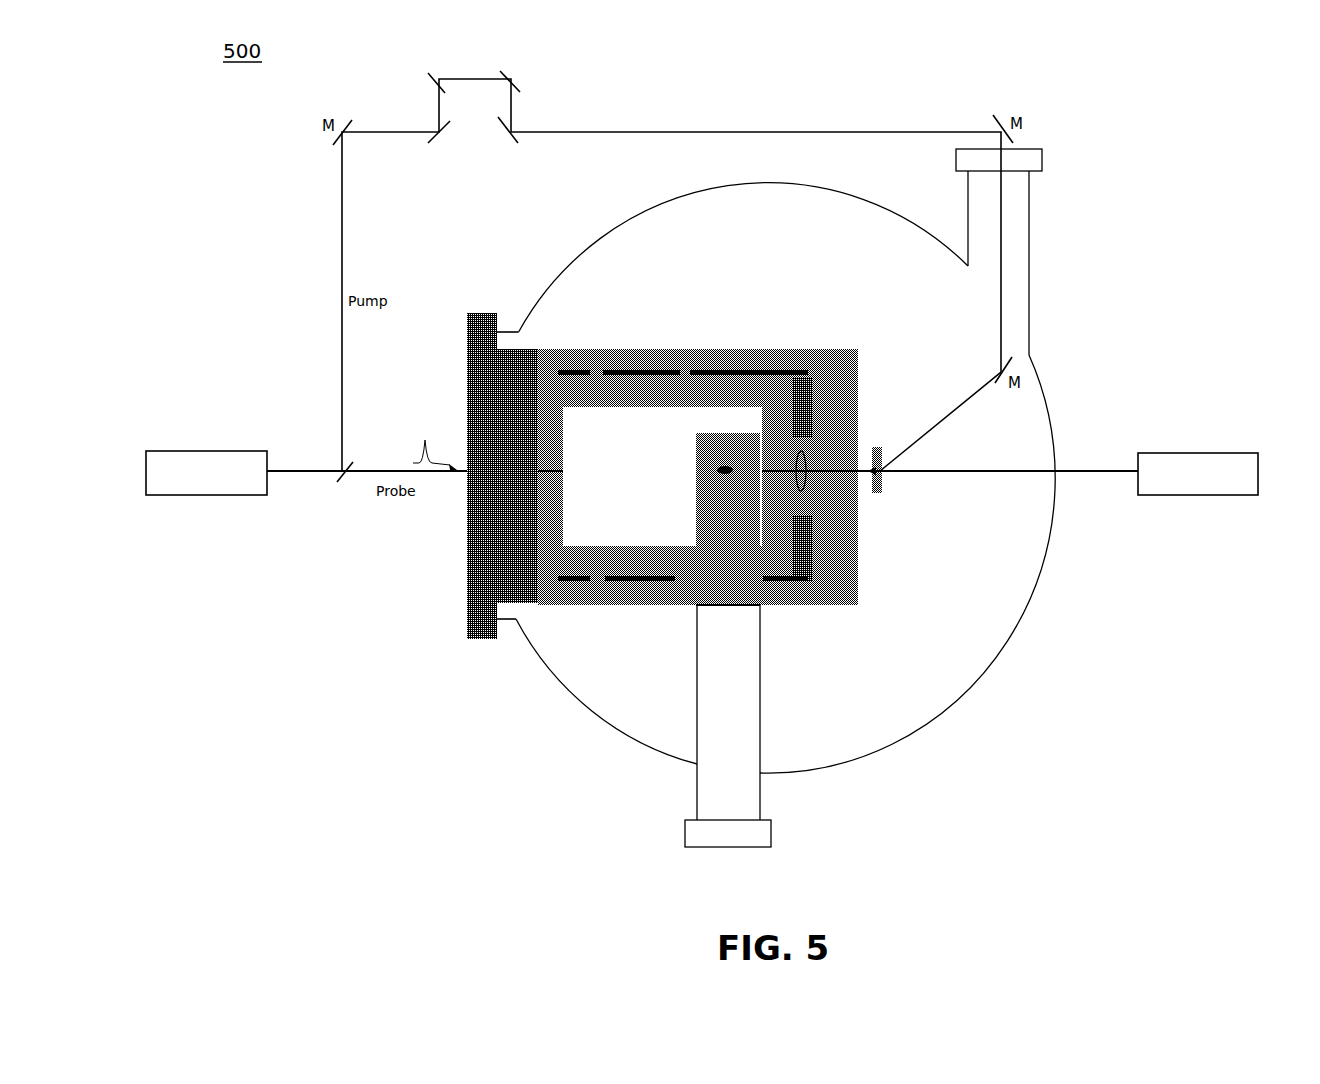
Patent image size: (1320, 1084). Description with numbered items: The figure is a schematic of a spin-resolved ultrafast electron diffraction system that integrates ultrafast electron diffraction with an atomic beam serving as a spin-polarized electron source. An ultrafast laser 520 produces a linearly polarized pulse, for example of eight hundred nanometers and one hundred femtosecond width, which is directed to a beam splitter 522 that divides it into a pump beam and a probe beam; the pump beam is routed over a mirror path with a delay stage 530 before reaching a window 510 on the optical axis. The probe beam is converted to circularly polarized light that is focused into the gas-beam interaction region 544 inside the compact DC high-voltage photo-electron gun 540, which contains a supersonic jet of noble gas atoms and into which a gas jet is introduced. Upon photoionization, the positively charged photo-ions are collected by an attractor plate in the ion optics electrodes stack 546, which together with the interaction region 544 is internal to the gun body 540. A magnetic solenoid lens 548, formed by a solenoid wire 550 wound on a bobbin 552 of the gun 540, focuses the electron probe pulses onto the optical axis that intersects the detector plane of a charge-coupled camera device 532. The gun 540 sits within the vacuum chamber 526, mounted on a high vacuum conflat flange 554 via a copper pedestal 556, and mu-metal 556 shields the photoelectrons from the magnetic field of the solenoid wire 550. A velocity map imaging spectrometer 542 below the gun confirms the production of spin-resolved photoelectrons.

The window 510 is at (874, 433).
The ultrafast laser 520 is at (206, 473).
The beam splitter 522 is at (338, 486).
The vacuum chamber 526 is at (905, 735).
The delay stage 530 is at (474, 97).
The charge-coupled camera device (CCD) 532 is at (1198, 474).
The photo-electron gun 540 is at (858, 603).
The velocity map imaging (VMI) spectrometer 542 is at (757, 847).
The gas-beam interaction region 544 is at (716, 462).
The ion optics electrodes stack 546 is at (708, 492).
The magnetic solenoid lens 548 is at (820, 486).
The solenoid wire 550 is at (641, 364).
The bobbin 552 is at (680, 383).
The high vacuum conflat flange 554 is at (470, 325).
The copper pedestal 556 is at (520, 347).